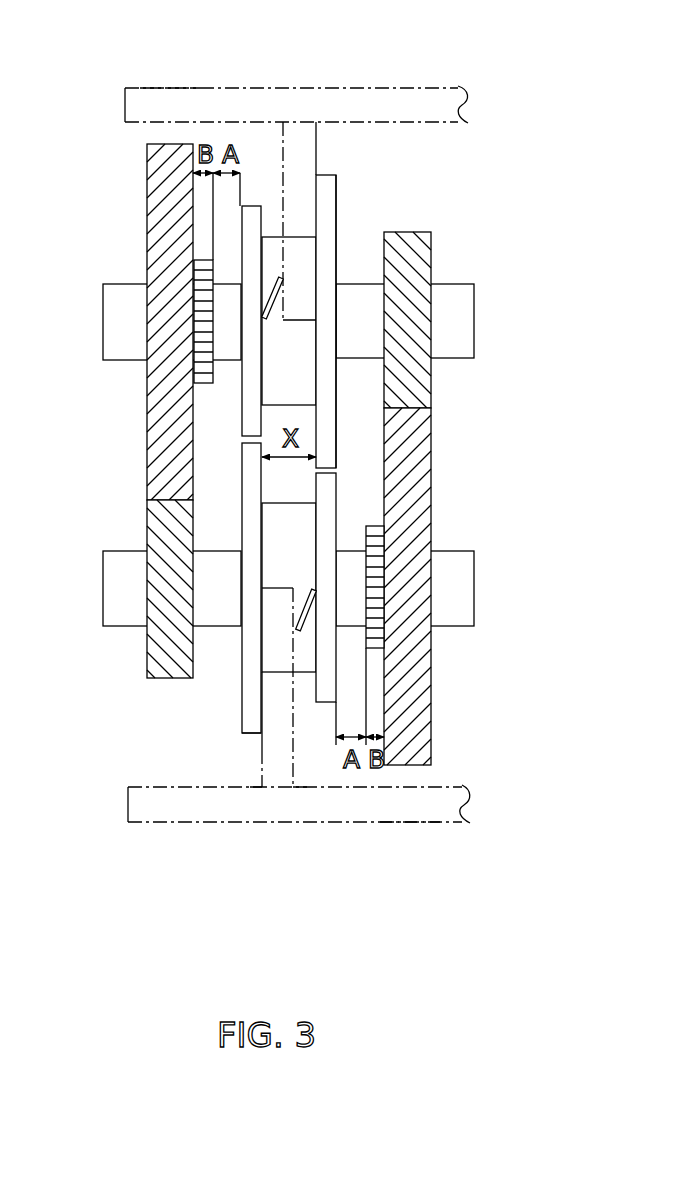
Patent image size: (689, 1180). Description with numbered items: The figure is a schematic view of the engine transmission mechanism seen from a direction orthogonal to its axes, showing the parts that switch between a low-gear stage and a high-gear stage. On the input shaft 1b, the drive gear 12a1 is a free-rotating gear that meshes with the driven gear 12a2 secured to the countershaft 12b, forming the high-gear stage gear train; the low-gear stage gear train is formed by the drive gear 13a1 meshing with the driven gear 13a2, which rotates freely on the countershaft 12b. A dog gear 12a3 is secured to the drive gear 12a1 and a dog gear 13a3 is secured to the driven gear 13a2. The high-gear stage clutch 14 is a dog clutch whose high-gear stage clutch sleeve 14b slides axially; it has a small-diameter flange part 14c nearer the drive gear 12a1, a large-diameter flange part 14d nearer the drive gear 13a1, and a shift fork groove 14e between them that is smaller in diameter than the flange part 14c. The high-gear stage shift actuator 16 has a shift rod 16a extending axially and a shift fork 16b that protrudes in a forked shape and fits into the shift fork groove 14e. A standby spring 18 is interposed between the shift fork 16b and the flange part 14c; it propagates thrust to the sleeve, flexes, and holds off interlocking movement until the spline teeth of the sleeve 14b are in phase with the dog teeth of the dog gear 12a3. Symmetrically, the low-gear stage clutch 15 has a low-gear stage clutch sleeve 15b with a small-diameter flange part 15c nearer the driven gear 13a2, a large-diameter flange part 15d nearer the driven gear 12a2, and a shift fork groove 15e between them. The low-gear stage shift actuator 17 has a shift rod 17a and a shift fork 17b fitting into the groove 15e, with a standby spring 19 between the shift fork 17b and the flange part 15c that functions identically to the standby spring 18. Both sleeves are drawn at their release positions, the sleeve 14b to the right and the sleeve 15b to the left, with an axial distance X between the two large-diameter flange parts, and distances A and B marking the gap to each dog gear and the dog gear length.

The input shaft 1b is at (113, 300).
The drive gear 12a1 is at (146, 180).
The driven gear 12a2 is at (146, 657).
The dog gear 12a3 is at (200, 367).
The countershaft 12b is at (113, 573).
The drive gear 13a1 is at (433, 252).
The driven gear 13a2 is at (434, 728).
The dog gear 13a3 is at (378, 596).
The high-gear stage clutch 14 is at (352, 216).
The high-gear stage clutch sleeve 14b is at (342, 178).
The small-diameter flange part 14c is at (253, 205).
The large-diameter flange part 14d is at (327, 173).
The shift fork groove 14e is at (305, 341).
The low-gear stage clutch 15 is at (226, 692).
The low-gear stage clutch sleeve 15b is at (238, 729).
The small-diameter flange part 15c is at (338, 498).
The large-diameter flange part 15d is at (238, 479).
The shift fork groove 15e is at (308, 530).
The high-gear stage shift actuator 16 is at (130, 84).
The shift rod 16a is at (172, 87).
The shift fork 16b is at (283, 226).
The low-gear stage shift actuator 17 is at (156, 828).
The shift rod 17a is at (405, 824).
The shift fork 17b is at (262, 768).
The standby spring 18 is at (264, 294).
The standby spring 19 is at (316, 606).